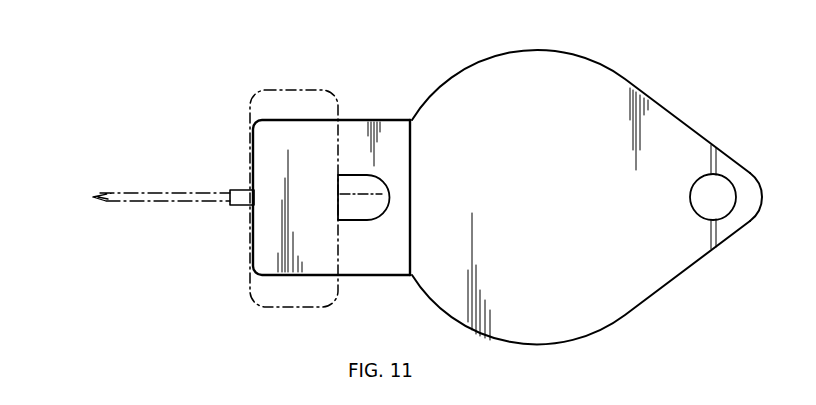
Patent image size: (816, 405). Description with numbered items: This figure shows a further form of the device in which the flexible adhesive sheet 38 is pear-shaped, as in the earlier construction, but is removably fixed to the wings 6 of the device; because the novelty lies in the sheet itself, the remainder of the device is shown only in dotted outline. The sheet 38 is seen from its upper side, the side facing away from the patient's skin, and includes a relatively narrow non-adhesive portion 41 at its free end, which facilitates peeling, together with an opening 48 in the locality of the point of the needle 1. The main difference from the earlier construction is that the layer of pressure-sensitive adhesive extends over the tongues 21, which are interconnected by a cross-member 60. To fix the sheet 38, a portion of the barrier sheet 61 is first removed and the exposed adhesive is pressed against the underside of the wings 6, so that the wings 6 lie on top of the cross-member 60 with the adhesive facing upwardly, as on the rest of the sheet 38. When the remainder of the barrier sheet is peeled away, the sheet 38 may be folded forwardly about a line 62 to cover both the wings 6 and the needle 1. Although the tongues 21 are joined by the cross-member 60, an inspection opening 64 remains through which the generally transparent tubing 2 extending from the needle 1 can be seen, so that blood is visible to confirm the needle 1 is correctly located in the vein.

The needle 1 is at (147, 192).
The tubing 2 is at (360, 207).
The wings 6 is at (285, 90).
The tongues 21 is at (366, 120).
The flexible adhesive sheet 38 is at (594, 60).
The non-adhesive portion 41 is at (758, 217).
The opening 48 is at (709, 183).
The cross-member 60 is at (248, 141).
The barrier sheet portion 61 is at (312, 258).
The fold line 62 is at (410, 278).
The inspection opening 64 is at (362, 182).